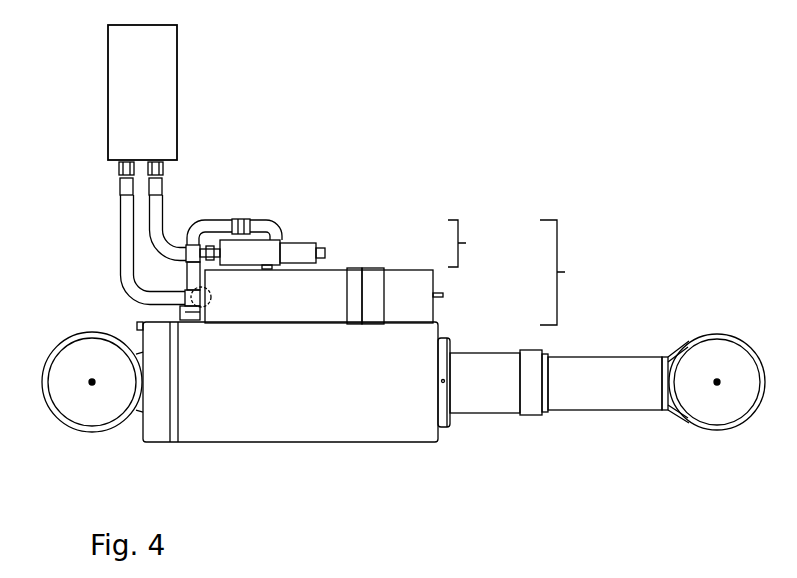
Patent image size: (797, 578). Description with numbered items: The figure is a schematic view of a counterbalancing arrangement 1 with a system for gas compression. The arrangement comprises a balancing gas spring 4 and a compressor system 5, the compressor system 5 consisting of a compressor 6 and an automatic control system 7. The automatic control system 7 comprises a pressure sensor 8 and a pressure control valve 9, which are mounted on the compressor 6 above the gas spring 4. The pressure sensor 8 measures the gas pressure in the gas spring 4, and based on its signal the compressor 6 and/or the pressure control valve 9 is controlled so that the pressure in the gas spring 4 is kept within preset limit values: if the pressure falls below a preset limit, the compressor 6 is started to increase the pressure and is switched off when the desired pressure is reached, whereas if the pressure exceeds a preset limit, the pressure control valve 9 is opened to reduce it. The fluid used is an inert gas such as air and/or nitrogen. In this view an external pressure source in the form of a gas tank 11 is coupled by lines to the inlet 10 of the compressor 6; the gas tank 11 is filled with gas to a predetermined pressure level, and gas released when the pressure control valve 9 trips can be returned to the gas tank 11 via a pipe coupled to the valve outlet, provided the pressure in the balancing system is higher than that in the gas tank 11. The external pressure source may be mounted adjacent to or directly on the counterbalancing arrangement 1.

The counterbalancing arrangement 1 is at (314, 484).
The balancing gas spring 4 is at (398, 430).
The compressor system 5 is at (565, 272).
The compressor 6 is at (325, 285).
The automatic control system 7 is at (469, 243).
The pressure sensor 8 is at (300, 250).
The pressure control valve 9 is at (235, 250).
The inlet 10 is at (185, 302).
The gas tank 11 is at (155, 95).